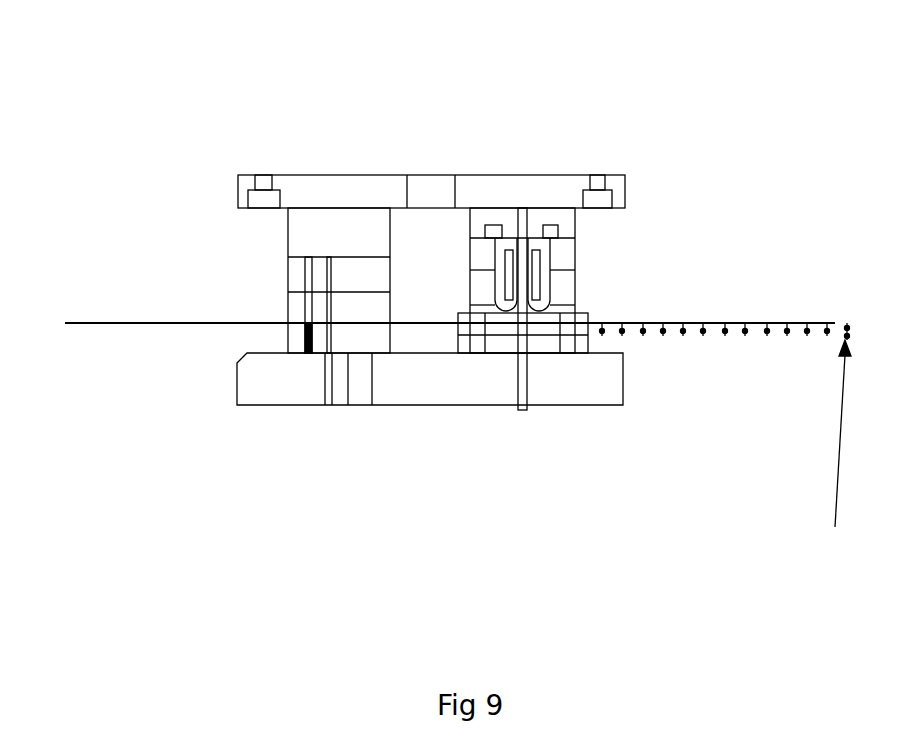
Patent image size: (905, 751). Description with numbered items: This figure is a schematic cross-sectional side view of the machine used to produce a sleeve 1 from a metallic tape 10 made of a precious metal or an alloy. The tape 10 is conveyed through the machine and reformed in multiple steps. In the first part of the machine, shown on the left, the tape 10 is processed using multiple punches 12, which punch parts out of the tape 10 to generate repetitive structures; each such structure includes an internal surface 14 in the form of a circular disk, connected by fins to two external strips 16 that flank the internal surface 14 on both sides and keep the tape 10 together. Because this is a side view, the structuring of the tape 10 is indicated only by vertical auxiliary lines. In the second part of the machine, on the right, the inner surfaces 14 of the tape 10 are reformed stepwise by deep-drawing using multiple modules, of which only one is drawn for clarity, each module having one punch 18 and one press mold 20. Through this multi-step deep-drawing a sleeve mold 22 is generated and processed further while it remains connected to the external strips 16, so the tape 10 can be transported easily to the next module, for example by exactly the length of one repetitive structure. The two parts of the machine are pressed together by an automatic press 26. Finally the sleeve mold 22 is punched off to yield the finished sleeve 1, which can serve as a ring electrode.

The sleeve 1 is at (837, 448).
The tape 10 is at (195, 325).
The punches 12 is at (320, 340).
The internal surface 14 is at (442, 322).
The external strips 16 is at (435, 322).
The punch 18 is at (528, 308).
The press mold 20 is at (530, 353).
The sleeve mold 22 is at (763, 330).
The automatic press 26 is at (493, 190).